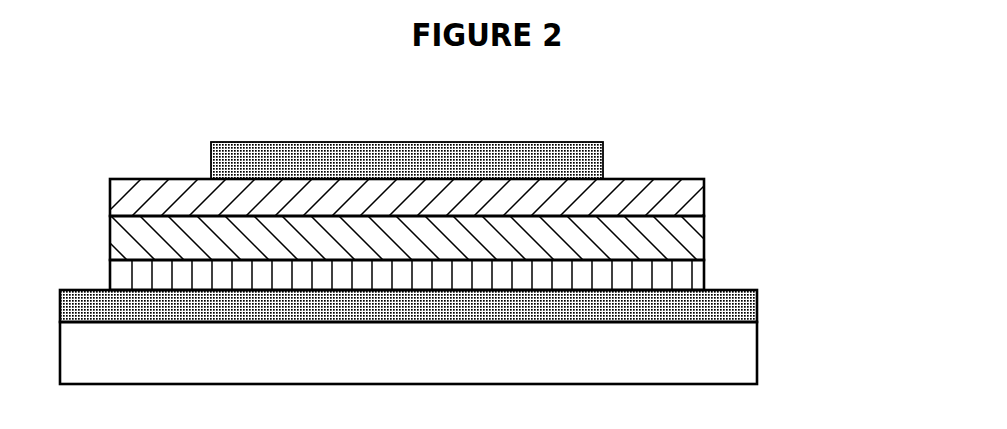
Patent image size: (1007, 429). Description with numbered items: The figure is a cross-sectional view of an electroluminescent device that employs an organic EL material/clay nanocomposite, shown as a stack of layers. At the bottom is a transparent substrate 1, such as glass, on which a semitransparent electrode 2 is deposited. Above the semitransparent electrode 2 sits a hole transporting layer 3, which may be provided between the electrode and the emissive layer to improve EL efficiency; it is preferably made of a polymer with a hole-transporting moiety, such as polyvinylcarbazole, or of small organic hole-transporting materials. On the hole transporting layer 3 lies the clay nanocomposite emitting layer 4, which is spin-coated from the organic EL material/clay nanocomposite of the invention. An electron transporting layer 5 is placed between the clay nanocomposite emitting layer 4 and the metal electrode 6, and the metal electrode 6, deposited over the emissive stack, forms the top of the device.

The transparent substrate 1 is at (732, 358).
The semitransparent electrode 2 is at (738, 303).
The hole transporting layer 3 is at (680, 278).
The clay nanocomposite emitting layer 4 is at (672, 235).
The electron transporting layer 5 is at (678, 197).
The metal electrode 6 is at (563, 161).